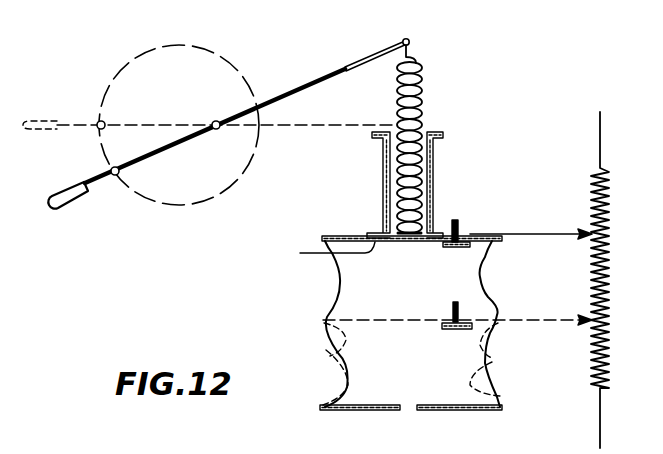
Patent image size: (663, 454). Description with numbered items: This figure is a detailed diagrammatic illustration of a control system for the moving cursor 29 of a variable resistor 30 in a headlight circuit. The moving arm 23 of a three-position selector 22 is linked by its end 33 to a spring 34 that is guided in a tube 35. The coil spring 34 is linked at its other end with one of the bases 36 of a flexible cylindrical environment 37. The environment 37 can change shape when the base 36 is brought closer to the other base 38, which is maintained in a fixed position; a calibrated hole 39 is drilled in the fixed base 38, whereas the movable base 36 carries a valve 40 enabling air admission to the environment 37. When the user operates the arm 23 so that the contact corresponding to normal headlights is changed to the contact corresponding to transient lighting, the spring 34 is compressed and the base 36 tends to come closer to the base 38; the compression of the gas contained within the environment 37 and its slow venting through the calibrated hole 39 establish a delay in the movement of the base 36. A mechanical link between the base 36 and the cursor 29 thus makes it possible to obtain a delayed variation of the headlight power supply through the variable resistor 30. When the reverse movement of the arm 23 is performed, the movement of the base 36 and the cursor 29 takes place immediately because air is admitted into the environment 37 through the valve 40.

The three-position selector 22 is at (258, 160).
The moving arm 23 is at (172, 146).
The moving cursor 29 is at (513, 238).
The variable resistor 30 is at (610, 214).
The end 33 is at (410, 42).
The spring 34 is at (425, 92).
The tube 35 is at (434, 181).
The base 36 is at (387, 251).
The flexible cylindrical environment 37 is at (530, 341).
The base 38 is at (470, 412).
The calibrated hole 39 is at (407, 412).
The valve 40 is at (465, 226).